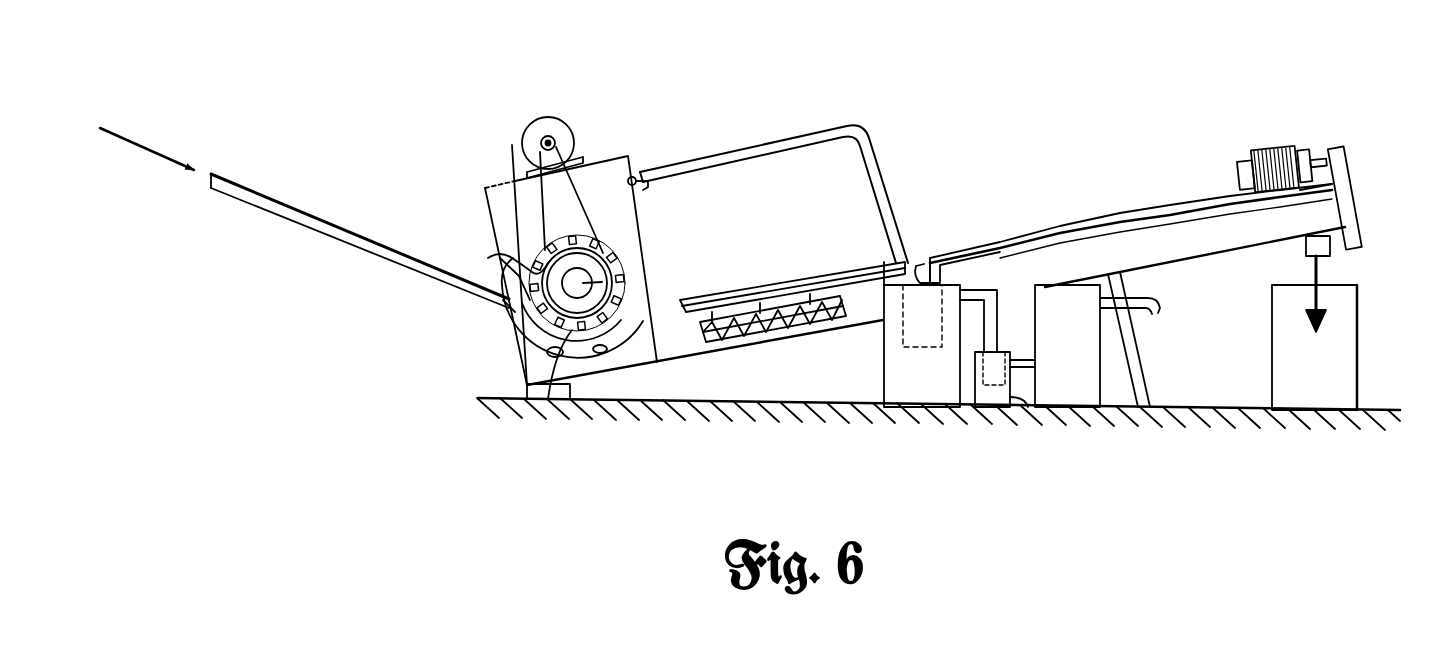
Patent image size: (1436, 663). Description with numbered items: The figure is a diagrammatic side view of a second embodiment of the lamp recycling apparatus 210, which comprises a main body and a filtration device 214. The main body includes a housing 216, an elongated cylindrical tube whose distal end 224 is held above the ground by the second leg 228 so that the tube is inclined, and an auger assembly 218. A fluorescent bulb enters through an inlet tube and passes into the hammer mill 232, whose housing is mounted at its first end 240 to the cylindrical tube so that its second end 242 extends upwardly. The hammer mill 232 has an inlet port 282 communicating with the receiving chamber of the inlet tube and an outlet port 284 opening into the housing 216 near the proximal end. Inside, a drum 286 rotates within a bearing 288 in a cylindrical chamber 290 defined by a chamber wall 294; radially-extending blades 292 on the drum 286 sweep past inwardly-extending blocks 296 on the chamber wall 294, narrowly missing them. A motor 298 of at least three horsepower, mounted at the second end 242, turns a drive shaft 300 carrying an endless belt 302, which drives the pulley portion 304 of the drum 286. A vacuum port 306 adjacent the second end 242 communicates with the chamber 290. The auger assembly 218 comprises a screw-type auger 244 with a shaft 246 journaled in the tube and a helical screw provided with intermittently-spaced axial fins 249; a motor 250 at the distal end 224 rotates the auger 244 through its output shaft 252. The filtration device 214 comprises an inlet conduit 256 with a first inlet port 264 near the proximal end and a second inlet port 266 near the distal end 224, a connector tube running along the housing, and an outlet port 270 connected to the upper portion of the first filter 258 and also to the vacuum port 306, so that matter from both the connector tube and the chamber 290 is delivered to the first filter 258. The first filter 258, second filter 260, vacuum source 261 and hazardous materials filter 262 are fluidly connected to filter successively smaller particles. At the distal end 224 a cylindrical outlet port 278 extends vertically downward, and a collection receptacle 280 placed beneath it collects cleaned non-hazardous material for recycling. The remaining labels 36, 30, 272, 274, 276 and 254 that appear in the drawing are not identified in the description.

The feed chute 36 is at (271, 200).
The feed conveyor 30 is at (431, 258).
The hammer mill 232 is at (637, 82).
The second end 242 is at (498, 195).
The first end 240 is at (523, 350).
The outlet port 284 is at (548, 399).
The drive shaft 300 is at (568, 128).
The motor 298 is at (547, 102).
The pulley portion 304 is at (589, 244).
The endless belt 302 is at (512, 145).
The bearing 288 is at (614, 262).
The chamber wall 294 is at (614, 275).
The cylindrical chamber 290 is at (621, 241).
The drum 286 is at (593, 240).
The inwardly-extending blocks 296 is at (493, 258).
The inlet port 282 is at (510, 308).
The radially-extending blades 292 is at (580, 323).
The vacuum port 306 is at (678, 172).
The auger assembly 218 is at (822, 298).
The screw-type auger 244 is at (768, 337).
The shaft 246 is at (772, 318).
The first inlet port 264 is at (710, 295).
The axial fins 249 is at (801, 306).
The housing 216 is at (887, 303).
The outlet port 270 is at (914, 274).
The inlet conduit 256 is at (1021, 238).
The distal end 224 is at (1336, 216).
The second inlet port 266 is at (1300, 194).
The first filter 258 is at (915, 388).
The pipe 272 is at (983, 291).
The second filter 260 is at (995, 392).
The pipe 274 is at (1025, 356).
The vacuum source 261 is at (1032, 410).
The hazardous materials filter 262 is at (1073, 388).
The outlet pipe 276 is at (1162, 303).
The second leg 228 is at (1146, 365).
The motor 250 is at (1306, 146).
The output shaft 252 is at (1321, 158).
The end plate 254 is at (1346, 172).
The cylindrical outlet port 278 is at (1329, 254).
The collection receptacle 280 is at (1364, 366).
The lamp recycling apparatus 210 is at (1015, 149).
The filtration device 214 is at (1147, 464).